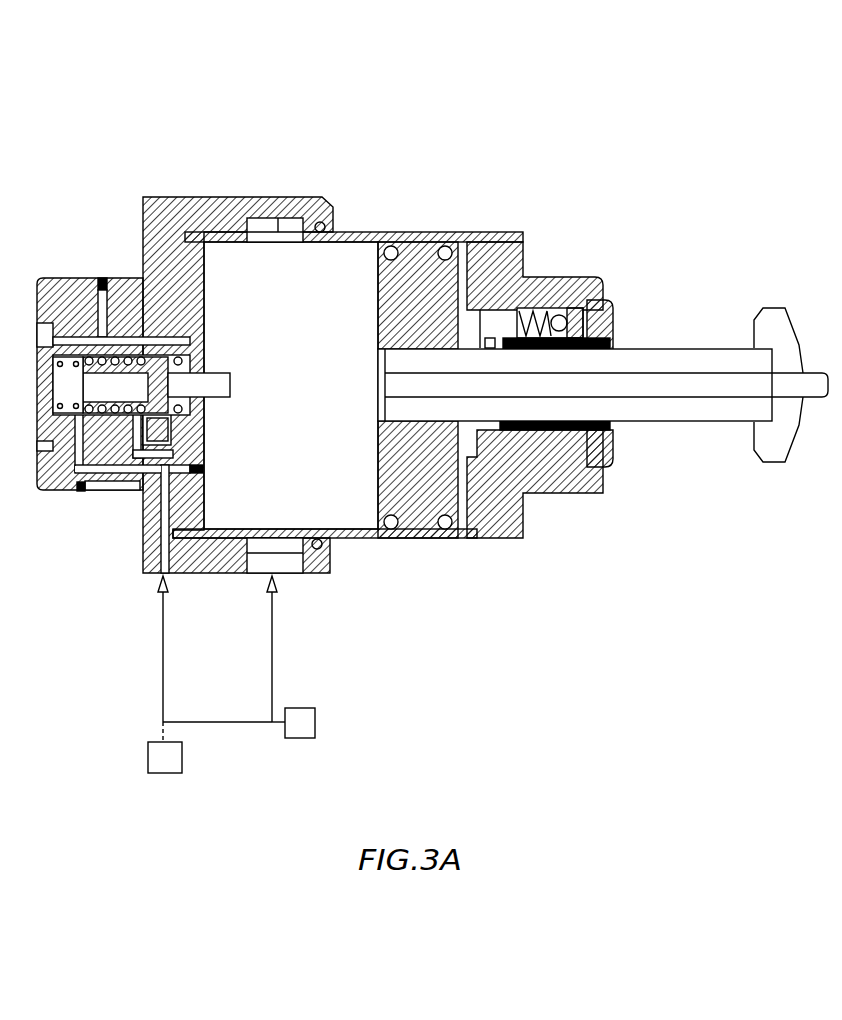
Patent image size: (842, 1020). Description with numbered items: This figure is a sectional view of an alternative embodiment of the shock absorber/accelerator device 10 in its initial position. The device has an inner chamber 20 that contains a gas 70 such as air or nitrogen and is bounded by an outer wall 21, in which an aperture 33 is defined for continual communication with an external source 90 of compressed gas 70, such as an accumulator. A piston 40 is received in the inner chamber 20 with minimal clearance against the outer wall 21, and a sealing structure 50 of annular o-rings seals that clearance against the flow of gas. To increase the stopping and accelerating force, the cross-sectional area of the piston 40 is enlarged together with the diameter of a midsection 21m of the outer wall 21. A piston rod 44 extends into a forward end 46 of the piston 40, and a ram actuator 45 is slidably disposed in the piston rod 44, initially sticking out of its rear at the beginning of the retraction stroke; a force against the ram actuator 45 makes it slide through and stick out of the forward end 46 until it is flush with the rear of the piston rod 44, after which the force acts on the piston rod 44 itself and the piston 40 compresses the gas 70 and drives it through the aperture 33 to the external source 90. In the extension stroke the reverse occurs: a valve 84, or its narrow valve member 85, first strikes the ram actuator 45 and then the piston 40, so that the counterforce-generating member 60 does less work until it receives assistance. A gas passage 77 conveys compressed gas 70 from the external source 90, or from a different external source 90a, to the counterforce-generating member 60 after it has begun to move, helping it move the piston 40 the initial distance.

The shock absorber/accelerator device 10 is at (559, 243).
The inner chamber 20 is at (325, 280).
The outer wall 21 is at (420, 233).
The midsection of outer wall 21m is at (347, 538).
The aperture 33 is at (278, 238).
The piston 40 is at (417, 477).
The piston rod 44 is at (665, 422).
The ram actuator 45 is at (717, 397).
The forward end of piston 46 is at (378, 490).
The sealing structure 50 is at (458, 533).
The counterforce-generating member 60 is at (70, 367).
The gas 70 is at (243, 470).
The gas passage 77 is at (143, 573).
The valve 84 is at (102, 407).
The narrow valve member 85 is at (215, 375).
The external source of compressed gas 90 is at (310, 726).
The different external source 90a is at (165, 765).